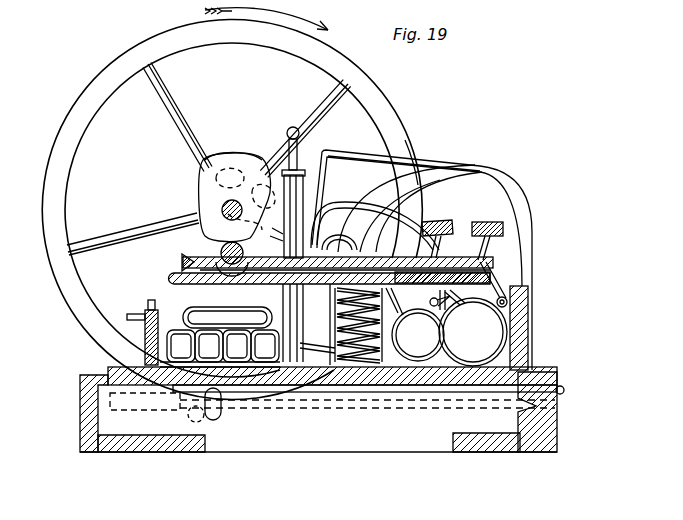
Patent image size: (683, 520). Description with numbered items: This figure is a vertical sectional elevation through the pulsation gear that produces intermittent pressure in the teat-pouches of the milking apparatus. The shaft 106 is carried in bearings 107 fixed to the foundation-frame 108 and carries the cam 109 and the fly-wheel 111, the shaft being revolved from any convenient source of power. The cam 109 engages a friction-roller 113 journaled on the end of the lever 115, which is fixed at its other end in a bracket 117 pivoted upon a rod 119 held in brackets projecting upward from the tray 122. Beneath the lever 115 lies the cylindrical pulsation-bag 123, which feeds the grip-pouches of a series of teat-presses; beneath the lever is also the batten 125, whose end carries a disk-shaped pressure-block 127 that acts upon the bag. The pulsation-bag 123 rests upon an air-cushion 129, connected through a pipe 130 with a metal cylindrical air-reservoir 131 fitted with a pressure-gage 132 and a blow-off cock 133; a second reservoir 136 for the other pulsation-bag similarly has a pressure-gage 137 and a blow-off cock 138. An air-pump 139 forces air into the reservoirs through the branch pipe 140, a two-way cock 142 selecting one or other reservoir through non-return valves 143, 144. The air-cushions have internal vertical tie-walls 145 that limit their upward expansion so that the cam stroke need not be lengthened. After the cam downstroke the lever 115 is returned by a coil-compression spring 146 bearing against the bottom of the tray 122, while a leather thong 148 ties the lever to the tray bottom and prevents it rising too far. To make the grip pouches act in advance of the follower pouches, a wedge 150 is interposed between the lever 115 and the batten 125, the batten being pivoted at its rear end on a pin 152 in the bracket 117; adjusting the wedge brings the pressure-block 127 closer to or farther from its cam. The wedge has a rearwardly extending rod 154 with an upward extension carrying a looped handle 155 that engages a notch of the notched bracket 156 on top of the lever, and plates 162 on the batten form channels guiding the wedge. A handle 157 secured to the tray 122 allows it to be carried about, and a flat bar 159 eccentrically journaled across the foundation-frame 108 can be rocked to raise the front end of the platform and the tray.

The shaft 106 is at (226, 206).
The bearings 107 is at (203, 172).
The foundation-frame 108 is at (408, 440).
The cam 109 is at (218, 157).
The fly-wheel 111 is at (390, 125).
The friction-roller 113 is at (226, 250).
The lever 115 is at (341, 248).
The bracket 117 is at (486, 265).
The rod 119 is at (508, 305).
The tray 122 is at (525, 358).
The pulsation-bag 123 is at (192, 316).
The batten 125 is at (337, 246).
The pressure-block 127 is at (223, 380).
The air-cushion 129 is at (272, 382).
The pipe 130 is at (330, 380).
The air-reservoir 131 is at (438, 380).
The pressure-gage 132 is at (433, 223).
The blow-off cock 133 is at (418, 324).
The reservoir 136 is at (490, 332).
The pressure-gage 137 is at (483, 222).
The blow-off cock 138 is at (505, 300).
The air-pump 139 is at (289, 178).
The branch pipe 140 is at (413, 157).
The two-way cock 142 is at (313, 243).
The non-return valve 143 is at (392, 380).
The non-return valve 144 is at (363, 248).
The tie-walls 145 is at (117, 367).
The coil-compression spring 146 is at (363, 393).
The thong 148 is at (308, 393).
The wedge 150 is at (184, 262).
The pin 152 is at (490, 278).
The rod 154 is at (190, 213).
The looped handle 155 is at (403, 247).
The notched bracket 156 is at (433, 173).
The handle 157 is at (532, 244).
The flat bar 159 is at (215, 420).
The plates 162 is at (172, 276).